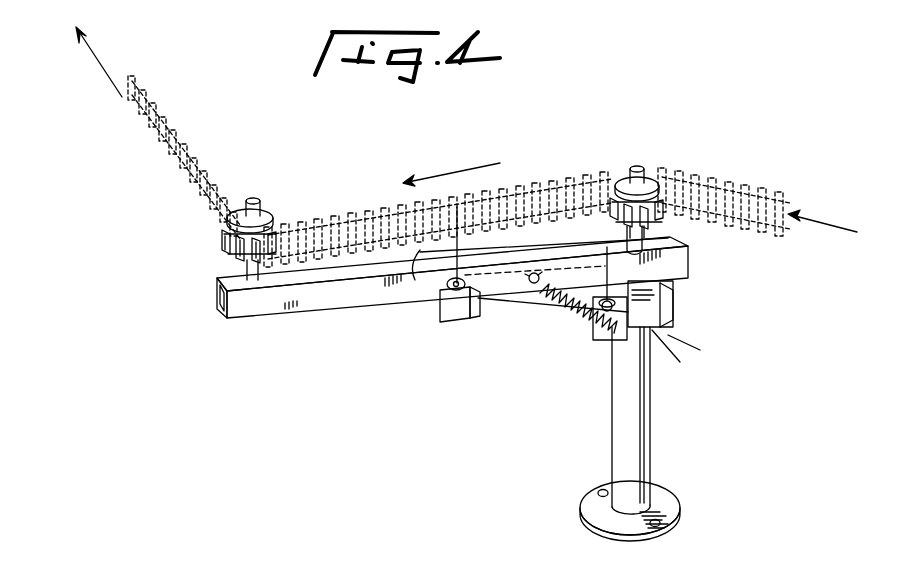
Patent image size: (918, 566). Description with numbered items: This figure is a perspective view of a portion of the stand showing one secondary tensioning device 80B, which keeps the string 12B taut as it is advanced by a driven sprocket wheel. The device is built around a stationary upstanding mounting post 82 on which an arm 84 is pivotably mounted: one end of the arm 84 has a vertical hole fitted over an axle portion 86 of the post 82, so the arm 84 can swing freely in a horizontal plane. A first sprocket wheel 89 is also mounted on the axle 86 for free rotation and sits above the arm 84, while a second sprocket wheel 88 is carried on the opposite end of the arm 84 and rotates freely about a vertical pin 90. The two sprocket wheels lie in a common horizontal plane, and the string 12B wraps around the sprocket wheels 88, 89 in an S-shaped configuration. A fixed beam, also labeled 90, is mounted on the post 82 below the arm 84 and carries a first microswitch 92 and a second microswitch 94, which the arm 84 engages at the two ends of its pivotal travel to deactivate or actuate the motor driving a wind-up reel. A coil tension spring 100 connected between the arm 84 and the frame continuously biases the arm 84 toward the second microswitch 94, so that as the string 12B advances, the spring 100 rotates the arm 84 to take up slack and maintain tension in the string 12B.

The secondary tensioning device 80B is at (588, 147).
The string 12B is at (173, 191).
The mounting post 82 is at (640, 428).
The arm 84 is at (329, 303).
The axle portion 86 is at (641, 166).
The second sprocket wheel 88 is at (283, 224).
The first sprocket wheel 89 is at (665, 203).
The vertical pin 90 is at (255, 205).
The first microswitch 92 is at (449, 320).
The second microswitch 94 is at (645, 310).
The coil tension spring 100 is at (610, 323).